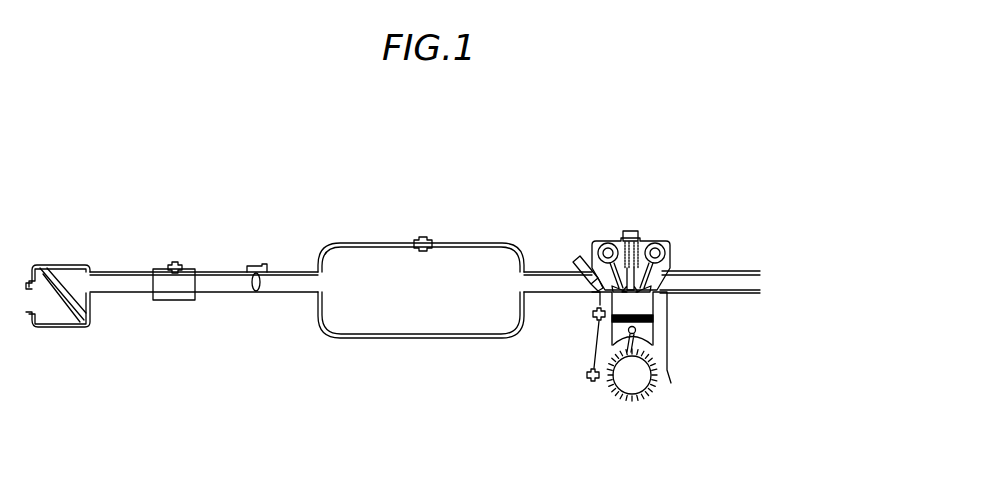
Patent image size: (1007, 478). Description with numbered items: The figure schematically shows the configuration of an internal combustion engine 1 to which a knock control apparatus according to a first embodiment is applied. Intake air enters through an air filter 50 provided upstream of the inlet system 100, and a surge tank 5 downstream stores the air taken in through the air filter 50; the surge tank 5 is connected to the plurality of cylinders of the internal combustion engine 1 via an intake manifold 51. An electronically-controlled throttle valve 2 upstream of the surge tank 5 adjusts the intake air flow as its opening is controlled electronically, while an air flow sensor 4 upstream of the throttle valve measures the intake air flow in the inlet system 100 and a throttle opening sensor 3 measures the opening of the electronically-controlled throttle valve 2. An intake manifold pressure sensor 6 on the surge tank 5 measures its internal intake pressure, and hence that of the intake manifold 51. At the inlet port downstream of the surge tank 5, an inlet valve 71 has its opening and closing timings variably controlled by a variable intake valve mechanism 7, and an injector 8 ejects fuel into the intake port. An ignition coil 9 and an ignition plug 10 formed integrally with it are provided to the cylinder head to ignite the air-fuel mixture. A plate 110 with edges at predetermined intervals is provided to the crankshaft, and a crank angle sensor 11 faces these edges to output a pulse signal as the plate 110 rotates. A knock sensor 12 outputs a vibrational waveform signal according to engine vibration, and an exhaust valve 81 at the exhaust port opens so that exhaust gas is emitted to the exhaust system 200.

The internal combustion engine 1 is at (656, 300).
The electronically-controlled throttle valve 2 is at (258, 291).
The throttle opening sensor 3 is at (258, 266).
The air flow sensor 4 is at (179, 266).
The surge tank 5 is at (418, 323).
The intake manifold pressure sensor 6 is at (427, 238).
The variable intake valve mechanism 7 is at (600, 260).
The injector 8 is at (572, 263).
The ignition coil 9 is at (624, 230).
The ignition plug 10 is at (665, 267).
The crank angle sensor 11 is at (585, 376).
The knock sensor 12 is at (593, 322).
The air filter 50 is at (53, 305).
The intake manifold 51 is at (557, 268).
The inlet valve 71 is at (596, 300).
The exhaust valve 81 is at (672, 300).
The inlet system 100 is at (177, 326).
The plate 110 is at (636, 387).
The exhaust system 200 is at (757, 268).